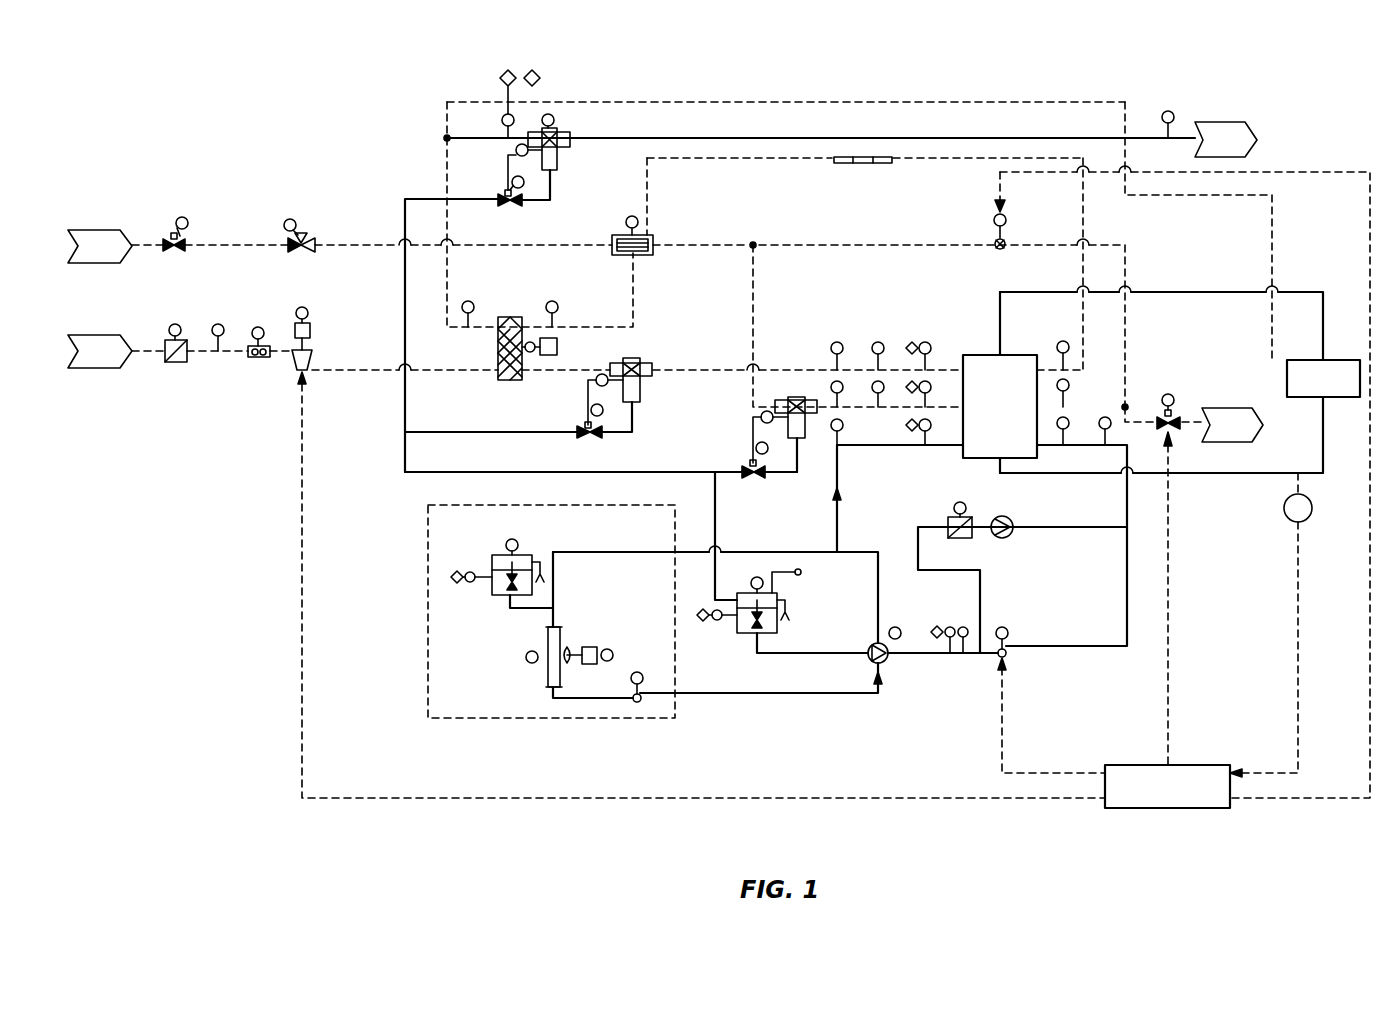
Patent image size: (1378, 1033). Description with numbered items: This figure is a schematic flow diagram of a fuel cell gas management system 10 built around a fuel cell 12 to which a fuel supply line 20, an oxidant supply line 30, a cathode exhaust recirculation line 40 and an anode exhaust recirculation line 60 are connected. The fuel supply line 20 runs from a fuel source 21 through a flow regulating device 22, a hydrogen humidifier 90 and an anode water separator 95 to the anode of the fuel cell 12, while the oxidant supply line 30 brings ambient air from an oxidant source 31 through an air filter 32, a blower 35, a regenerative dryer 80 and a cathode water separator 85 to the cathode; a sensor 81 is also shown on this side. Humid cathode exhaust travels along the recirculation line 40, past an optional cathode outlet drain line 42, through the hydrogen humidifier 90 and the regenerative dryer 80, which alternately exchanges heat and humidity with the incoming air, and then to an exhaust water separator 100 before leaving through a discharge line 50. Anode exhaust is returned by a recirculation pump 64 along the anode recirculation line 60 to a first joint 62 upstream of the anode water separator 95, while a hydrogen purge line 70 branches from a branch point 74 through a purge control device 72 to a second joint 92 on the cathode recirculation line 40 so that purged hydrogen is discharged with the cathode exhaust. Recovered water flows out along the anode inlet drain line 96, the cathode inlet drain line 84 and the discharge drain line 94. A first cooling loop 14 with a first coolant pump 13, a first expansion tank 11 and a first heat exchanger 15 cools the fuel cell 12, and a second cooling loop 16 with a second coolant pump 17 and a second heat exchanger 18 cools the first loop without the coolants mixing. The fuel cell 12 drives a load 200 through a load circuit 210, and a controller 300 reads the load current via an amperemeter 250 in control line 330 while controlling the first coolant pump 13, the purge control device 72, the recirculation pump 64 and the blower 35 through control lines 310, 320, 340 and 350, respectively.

The fuel cell gas management system 10 is at (348, 78).
The first expansion tank 11 is at (778, 624).
The fuel cell 12 is at (998, 354).
The first coolant pump 13 is at (998, 654).
The first cooling loop 14 is at (1140, 574).
The first heat exchanger 15 is at (886, 678).
The second cooling loop 16 is at (724, 694).
The second coolant pump 17 is at (641, 702).
The second heat exchanger 18 is at (548, 648).
The fuel supply line 20 is at (210, 245).
The fuel source 21 is at (106, 230).
The flow regulating device 22 is at (307, 237).
The oxidant supply line 30 is at (148, 356).
The oxidant source 31 is at (106, 335).
The air filter 32 is at (177, 363).
The blower 35 is at (299, 378).
The cathode exhaust recirculation line 40 is at (1003, 157).
The cathode outlet drain line 42 is at (1088, 372).
The discharge line 50 is at (1230, 122).
The anode exhaust recirculation line 60 is at (1128, 303).
The first joint 62 is at (753, 245).
The recirculation pump 64 is at (1005, 240).
The hydrogen purge line 70 is at (1273, 270).
The purge control device 72 is at (1180, 400).
The branch point 74 is at (1127, 406).
The regenerative dryer 80 is at (511, 380).
The sensor 81 is at (557, 348).
The cathode inlet drain line 84 is at (478, 434).
The cathode water separator 85 is at (641, 404).
The hydrogen humidifier 90 is at (644, 256).
The second joint 92 is at (447, 138).
The discharge drain line 94 is at (404, 418).
The anode water separator 95 is at (800, 398).
The anode inlet drain line 96 is at (770, 477).
The exhaust water separator 100 is at (557, 132).
The load 200 is at (1310, 360).
The load circuit 210 is at (1188, 478).
The amperemeter 250 is at (1313, 510).
The controller 300 is at (1158, 765).
The control line 310 is at (1018, 772).
The control line 320 is at (1172, 620).
The control line 330 is at (1297, 563).
The control line 340 is at (1302, 172).
The control line 350 is at (855, 800).